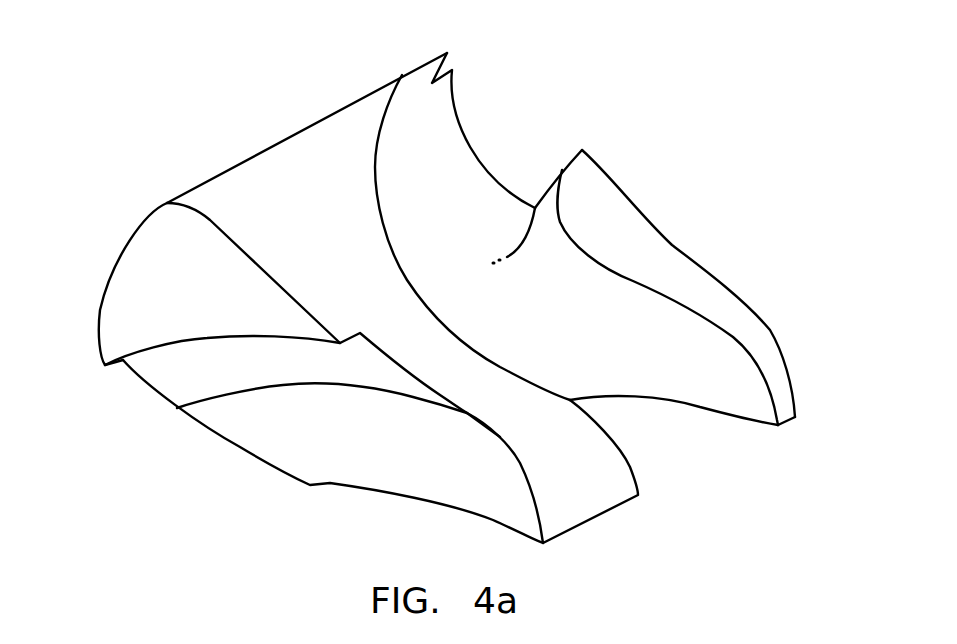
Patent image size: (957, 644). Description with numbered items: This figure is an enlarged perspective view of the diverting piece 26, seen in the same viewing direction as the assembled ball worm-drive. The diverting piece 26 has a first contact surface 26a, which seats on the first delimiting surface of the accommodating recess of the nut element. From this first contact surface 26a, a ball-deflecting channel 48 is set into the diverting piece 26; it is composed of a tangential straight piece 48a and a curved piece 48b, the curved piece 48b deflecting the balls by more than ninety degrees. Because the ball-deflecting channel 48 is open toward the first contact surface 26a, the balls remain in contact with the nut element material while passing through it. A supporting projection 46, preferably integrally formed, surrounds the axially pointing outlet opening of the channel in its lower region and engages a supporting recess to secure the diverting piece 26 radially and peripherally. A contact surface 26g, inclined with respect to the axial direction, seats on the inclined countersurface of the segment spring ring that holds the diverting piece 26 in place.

The diverting piece 26 is at (575, 110).
The first contact surface 26a is at (297, 167).
The contact surface 26g is at (178, 378).
The supporting projection 46 is at (477, 193).
The ball-deflecting channel 48 is at (542, 307).
The tangential straight piece 48a is at (670, 350).
The curved piece 48b is at (423, 132).